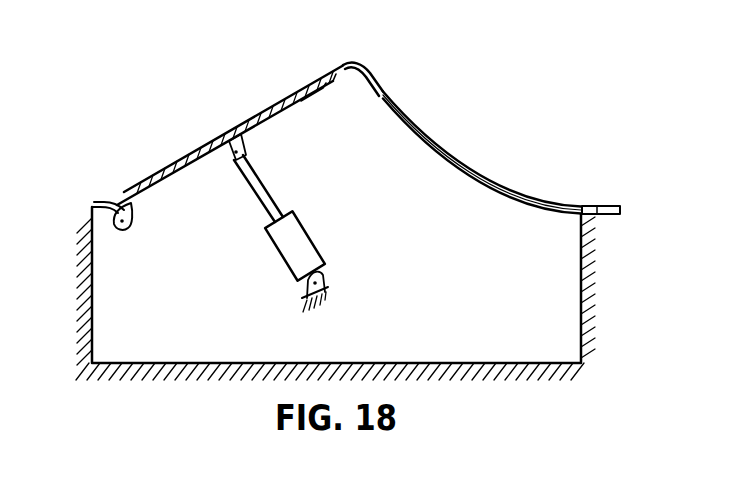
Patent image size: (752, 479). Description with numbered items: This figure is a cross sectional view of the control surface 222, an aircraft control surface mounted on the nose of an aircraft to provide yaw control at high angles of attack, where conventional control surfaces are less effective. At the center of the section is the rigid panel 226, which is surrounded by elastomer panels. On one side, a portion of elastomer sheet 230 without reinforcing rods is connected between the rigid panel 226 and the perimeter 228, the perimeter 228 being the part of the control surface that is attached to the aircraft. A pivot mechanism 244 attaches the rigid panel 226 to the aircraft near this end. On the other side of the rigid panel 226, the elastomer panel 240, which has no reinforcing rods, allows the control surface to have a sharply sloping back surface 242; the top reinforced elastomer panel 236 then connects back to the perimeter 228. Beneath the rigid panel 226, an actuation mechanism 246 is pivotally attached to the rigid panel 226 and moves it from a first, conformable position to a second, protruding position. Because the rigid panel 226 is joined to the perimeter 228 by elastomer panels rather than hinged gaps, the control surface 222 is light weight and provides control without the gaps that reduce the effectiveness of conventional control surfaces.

The control surface 222 is at (269, 30).
The sharply sloping back surface 242 is at (527, 34).
The rigid panel 226 is at (170, 163).
The elastomer sheet 230 is at (103, 202).
The pivot mechanism 244 is at (134, 221).
The elastomer panel 240 is at (344, 66).
The top reinforced elastomer panel 236 is at (448, 150).
The perimeter 228 is at (614, 206).
The actuation mechanism 246 is at (306, 228).